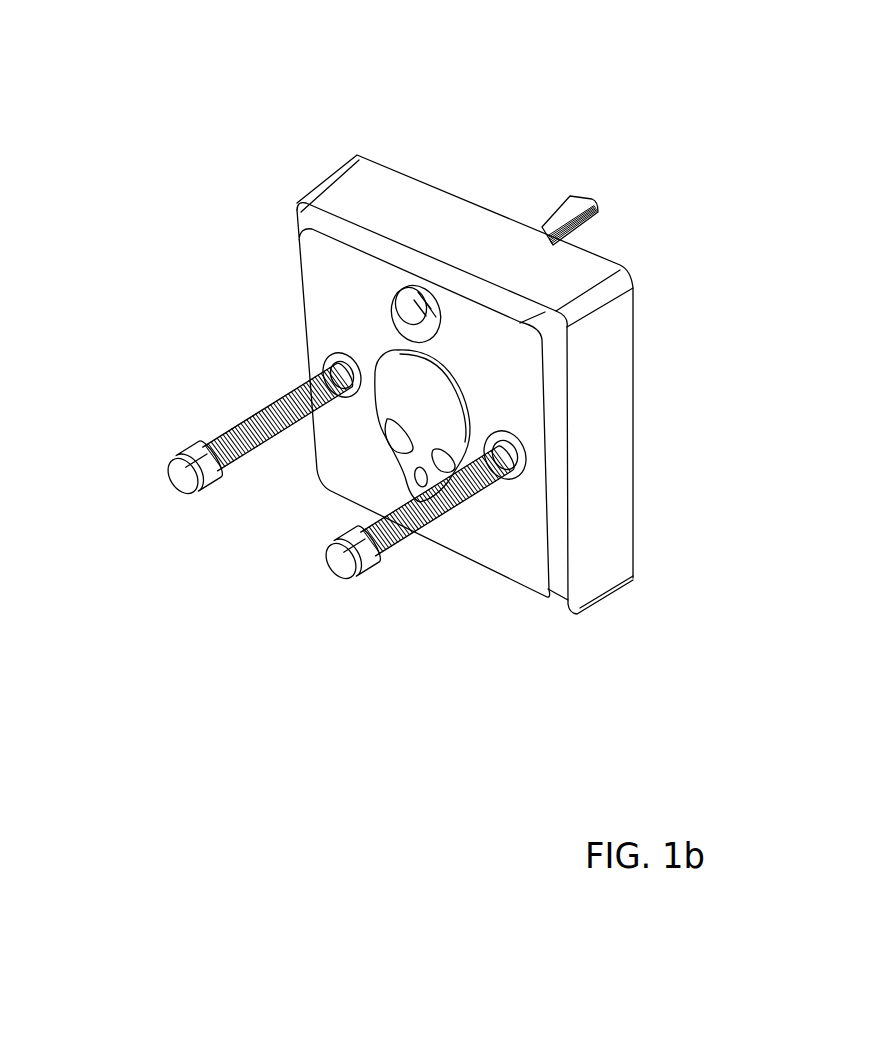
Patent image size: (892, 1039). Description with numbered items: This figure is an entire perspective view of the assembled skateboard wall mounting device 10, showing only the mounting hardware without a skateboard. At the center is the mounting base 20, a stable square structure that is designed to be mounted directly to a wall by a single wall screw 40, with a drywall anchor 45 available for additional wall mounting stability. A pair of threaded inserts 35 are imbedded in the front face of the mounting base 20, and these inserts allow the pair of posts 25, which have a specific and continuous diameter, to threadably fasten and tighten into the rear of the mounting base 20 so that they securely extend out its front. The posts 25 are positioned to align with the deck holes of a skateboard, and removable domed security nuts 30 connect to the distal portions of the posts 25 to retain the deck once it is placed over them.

The skateboard wall mounting device 10 is at (263, 111).
The mounting base 20 is at (612, 408).
The posts 25 is at (276, 510).
The removable domed security nuts 30 is at (166, 477).
The threaded inserts 35 is at (324, 361).
The wall screw 40 is at (406, 305).
The drywall anchor 45 is at (591, 202).